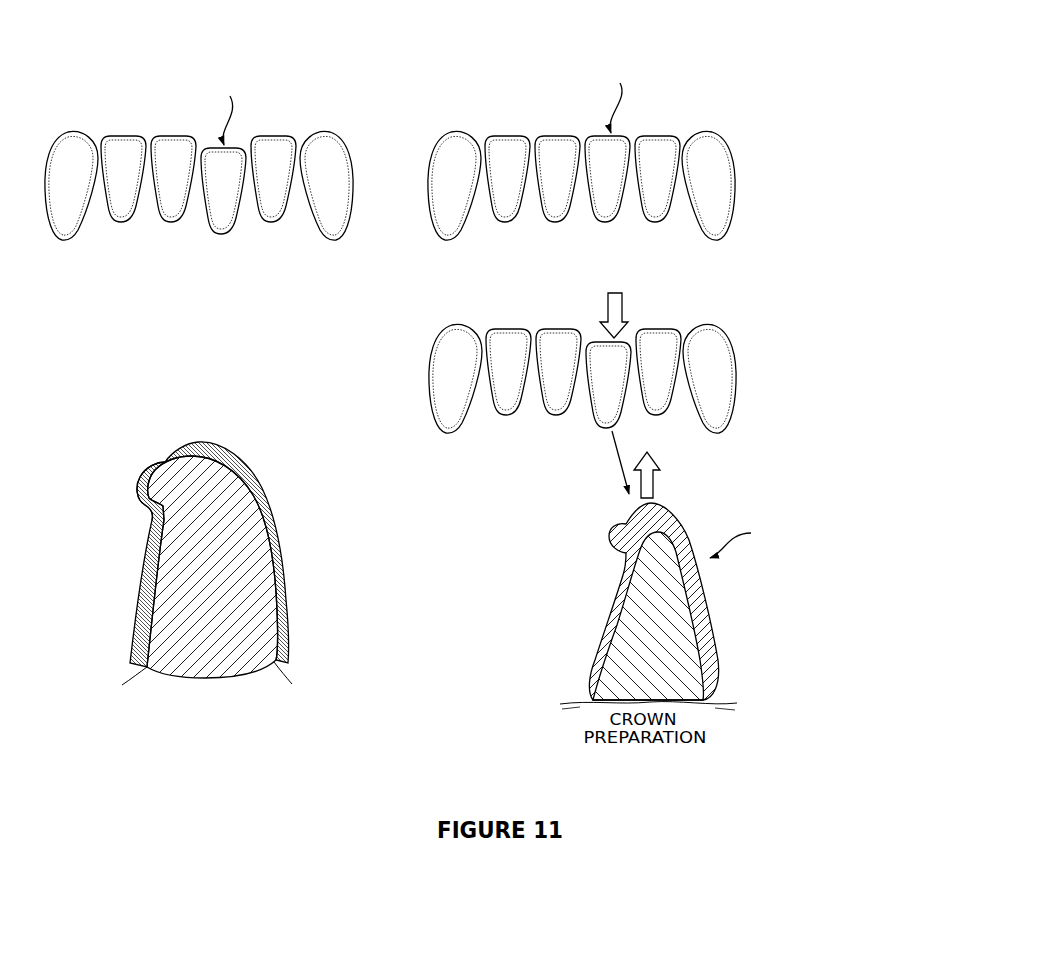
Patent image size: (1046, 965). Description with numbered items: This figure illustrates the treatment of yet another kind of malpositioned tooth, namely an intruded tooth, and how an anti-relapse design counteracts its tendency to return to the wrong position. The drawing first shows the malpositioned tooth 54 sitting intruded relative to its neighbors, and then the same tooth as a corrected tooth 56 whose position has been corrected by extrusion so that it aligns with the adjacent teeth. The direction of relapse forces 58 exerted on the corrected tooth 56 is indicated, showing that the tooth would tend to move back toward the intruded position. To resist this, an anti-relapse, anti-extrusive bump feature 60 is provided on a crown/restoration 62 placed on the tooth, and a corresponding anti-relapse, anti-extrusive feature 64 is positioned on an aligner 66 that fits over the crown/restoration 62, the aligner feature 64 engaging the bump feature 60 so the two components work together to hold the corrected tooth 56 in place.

The malpositioned tooth 54 is at (199, 132).
The corrected tooth 56 is at (586, 128).
The direction of relapse forces 58 is at (582, 376).
The anti-relapse/anti-extrusive feature 60 is at (590, 546).
The crown/restoration 62 is at (220, 704).
The anti-relapse/anti-extrusive feature 64 is at (124, 489).
The aligner 66 is at (260, 483).